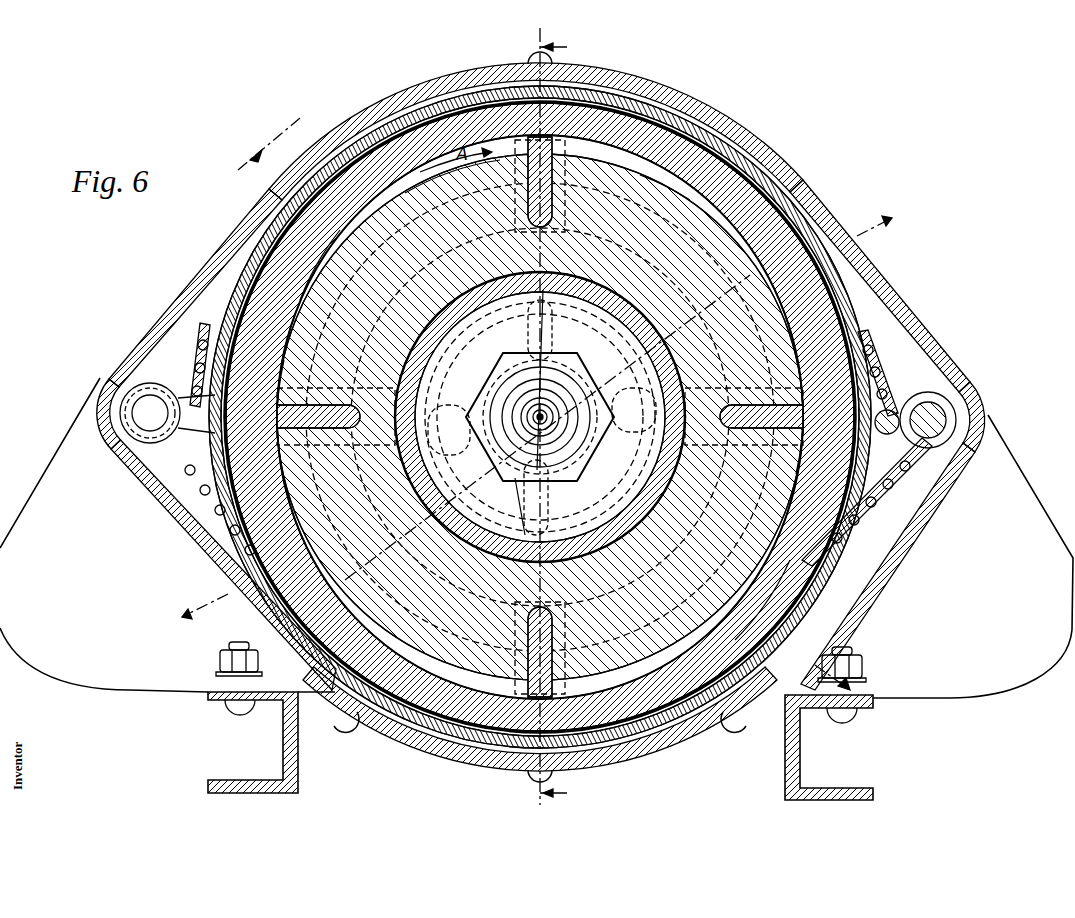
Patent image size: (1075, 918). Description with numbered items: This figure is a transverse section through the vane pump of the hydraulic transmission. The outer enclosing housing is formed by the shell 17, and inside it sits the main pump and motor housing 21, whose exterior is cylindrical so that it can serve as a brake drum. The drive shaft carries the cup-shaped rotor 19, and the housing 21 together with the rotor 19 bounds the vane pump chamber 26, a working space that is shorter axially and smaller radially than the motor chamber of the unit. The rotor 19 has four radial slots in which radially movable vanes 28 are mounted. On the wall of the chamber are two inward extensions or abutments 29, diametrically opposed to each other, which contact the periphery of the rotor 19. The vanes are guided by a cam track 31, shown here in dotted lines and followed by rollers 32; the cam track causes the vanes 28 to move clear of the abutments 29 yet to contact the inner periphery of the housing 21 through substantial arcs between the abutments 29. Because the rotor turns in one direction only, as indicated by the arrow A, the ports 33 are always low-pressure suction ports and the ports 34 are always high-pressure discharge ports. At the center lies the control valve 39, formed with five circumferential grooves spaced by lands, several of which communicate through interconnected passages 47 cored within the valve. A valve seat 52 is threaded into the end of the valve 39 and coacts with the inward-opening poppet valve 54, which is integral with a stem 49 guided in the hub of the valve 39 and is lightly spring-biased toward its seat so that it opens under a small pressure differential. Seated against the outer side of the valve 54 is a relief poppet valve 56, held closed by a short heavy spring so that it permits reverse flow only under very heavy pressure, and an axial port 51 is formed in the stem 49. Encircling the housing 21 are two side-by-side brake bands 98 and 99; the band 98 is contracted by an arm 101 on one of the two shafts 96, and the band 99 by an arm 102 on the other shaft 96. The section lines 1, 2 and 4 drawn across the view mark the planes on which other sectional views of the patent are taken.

The section line 1- 1 is at (551, 424).
The section line 2- 2 is at (262, 150).
The section line 4- 4 is at (892, 218).
The shell 17 is at (198, 273).
The cup-shaped rotor 19 is at (660, 192).
The main pump and motor housing 21 is at (350, 178).
The vane pump chamber 26 is at (444, 176).
The vanes 28 is at (527, 147).
The abutments 29 is at (278, 388).
The cam track 31 is at (620, 182).
The rollers 32 is at (570, 170).
The inlet ports 33 is at (544, 435).
The discharge ports 34 is at (546, 426).
The control valve 39 is at (598, 482).
The interconnected passages 47 is at (530, 331).
The stem 49 is at (538, 420).
The axial port 51 is at (545, 412).
The valve seat 52 is at (498, 375).
The inward opening poppet valve 54 is at (575, 430).
The relief poppet valve 56 is at (552, 482).
The shafts 96 is at (140, 407).
The brake band 98 is at (408, 115).
The brake band 99 is at (175, 485).
The arm 101 is at (893, 410).
The arm 102 is at (200, 395).